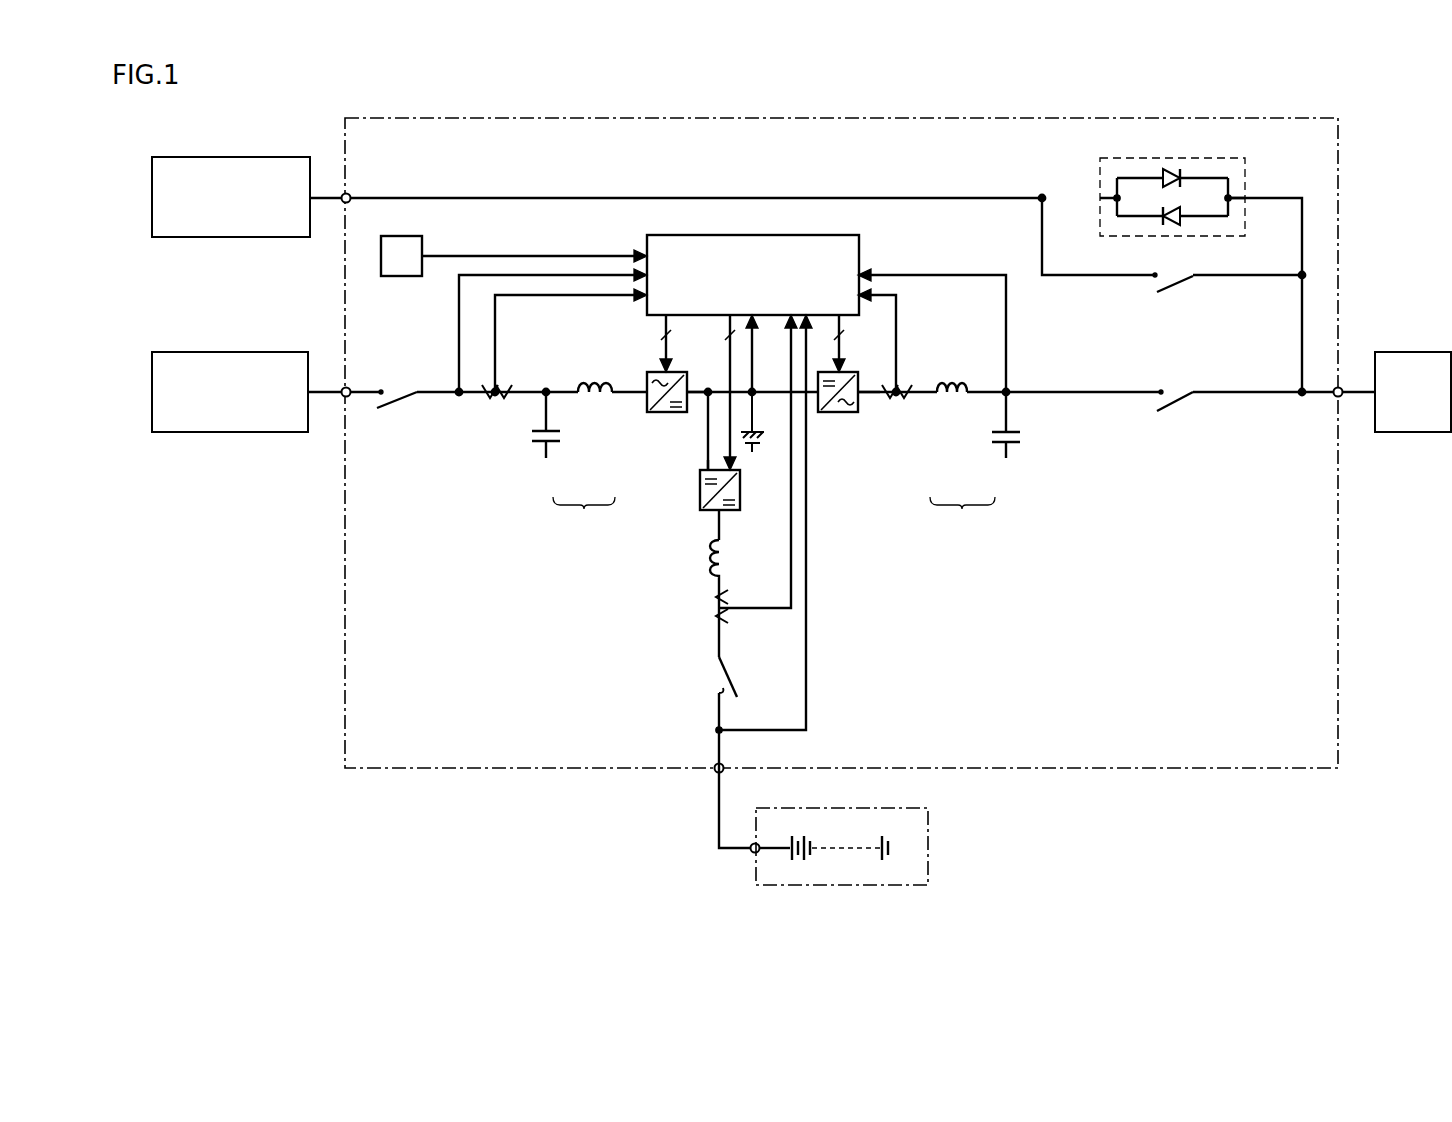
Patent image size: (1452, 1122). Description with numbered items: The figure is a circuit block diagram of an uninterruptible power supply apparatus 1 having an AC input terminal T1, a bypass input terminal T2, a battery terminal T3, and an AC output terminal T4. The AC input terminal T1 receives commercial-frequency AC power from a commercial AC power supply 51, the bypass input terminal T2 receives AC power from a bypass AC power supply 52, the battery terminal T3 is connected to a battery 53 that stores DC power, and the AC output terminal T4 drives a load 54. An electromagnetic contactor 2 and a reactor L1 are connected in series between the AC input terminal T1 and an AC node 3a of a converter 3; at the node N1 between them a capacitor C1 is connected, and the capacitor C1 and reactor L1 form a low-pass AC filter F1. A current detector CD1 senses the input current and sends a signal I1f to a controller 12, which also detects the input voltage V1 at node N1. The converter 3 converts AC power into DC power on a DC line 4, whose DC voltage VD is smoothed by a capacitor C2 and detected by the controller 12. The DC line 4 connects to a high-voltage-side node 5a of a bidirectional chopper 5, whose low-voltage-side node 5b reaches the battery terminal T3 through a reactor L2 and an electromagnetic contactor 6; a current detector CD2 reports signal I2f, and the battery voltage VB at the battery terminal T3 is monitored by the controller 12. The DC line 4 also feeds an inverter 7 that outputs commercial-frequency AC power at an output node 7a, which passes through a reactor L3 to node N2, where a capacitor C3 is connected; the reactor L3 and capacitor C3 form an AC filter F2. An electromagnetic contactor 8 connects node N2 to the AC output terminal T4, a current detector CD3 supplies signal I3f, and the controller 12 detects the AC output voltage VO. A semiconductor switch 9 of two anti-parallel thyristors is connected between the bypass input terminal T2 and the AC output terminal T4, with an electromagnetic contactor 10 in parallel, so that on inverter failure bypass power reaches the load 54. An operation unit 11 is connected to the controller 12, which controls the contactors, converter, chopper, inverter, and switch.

The uninterruptible power supply apparatus 1 is at (1306, 118).
The electromagnetic contactor 2 is at (398, 398).
The converter 3 is at (658, 372).
The AC node 3a is at (652, 410).
The DC line 4 is at (707, 386).
The bidirectional chopper 5 is at (700, 490).
The high-voltage-side node 5a is at (702, 470).
The low-voltage-side node 5b is at (712, 512).
The electromagnetic contactor 6 is at (728, 676).
The inverter 7 is at (848, 372).
The output node 7a is at (862, 400).
The electromagnetic contactor 8 is at (1175, 400).
The semiconductor switch 9 is at (1212, 158).
The electromagnetic contactor 10 is at (1173, 284).
The operation unit 11 is at (408, 236).
The controller 12 is at (815, 235).
The commercial AC power supply 51 is at (265, 352).
The bypass AC power supply 52 is at (265, 157).
The battery 53 is at (875, 808).
The load 54 is at (1405, 352).
The AC input terminal T1 is at (342, 398).
The bypass input terminal T2 is at (342, 205).
The battery terminal T3 is at (712, 774).
The AC output terminal T4 is at (1342, 398).
The node N1 is at (457, 388).
The node N2 is at (1008, 390).
The input voltage detector V1 is at (456, 339).
The signal I1f is at (498, 339).
The current detector CD1 is at (491, 402).
The capacitor C1 is at (560, 448).
The reactor L1 is at (598, 400).
The AC filter F1 is at (584, 516).
The DC voltage VD is at (754, 388).
The capacitor C2 is at (757, 447).
The signal I2f is at (755, 604).
The current detector CD2 is at (714, 600).
The reactor L2 is at (712, 557).
The battery voltage VB is at (716, 730).
The current detector CD3 is at (896, 404).
The signal I3f is at (900, 339).
The AC output voltage VO is at (1009, 339).
The reactor L3 is at (950, 400).
The capacitor C3 is at (1005, 447).
The AC filter F2 is at (962, 518).